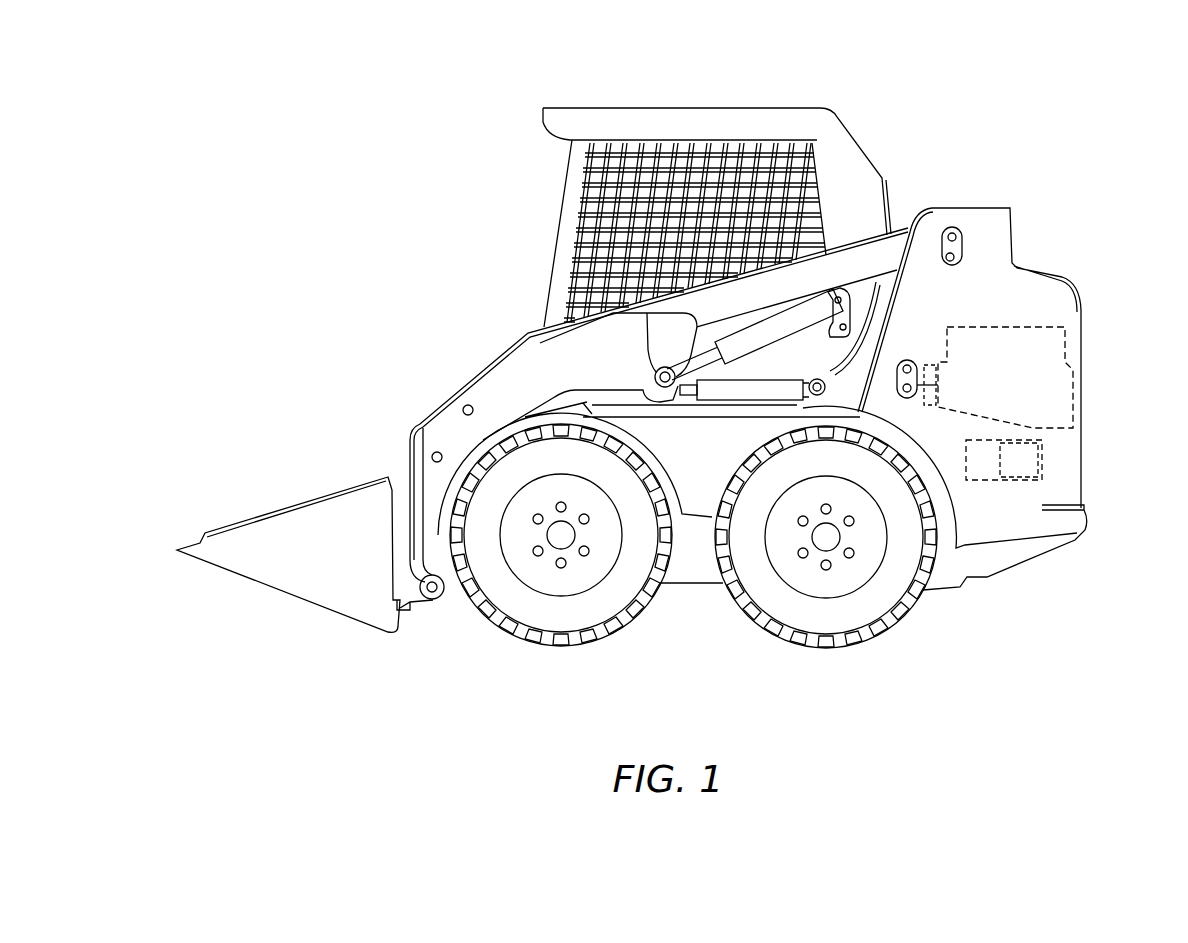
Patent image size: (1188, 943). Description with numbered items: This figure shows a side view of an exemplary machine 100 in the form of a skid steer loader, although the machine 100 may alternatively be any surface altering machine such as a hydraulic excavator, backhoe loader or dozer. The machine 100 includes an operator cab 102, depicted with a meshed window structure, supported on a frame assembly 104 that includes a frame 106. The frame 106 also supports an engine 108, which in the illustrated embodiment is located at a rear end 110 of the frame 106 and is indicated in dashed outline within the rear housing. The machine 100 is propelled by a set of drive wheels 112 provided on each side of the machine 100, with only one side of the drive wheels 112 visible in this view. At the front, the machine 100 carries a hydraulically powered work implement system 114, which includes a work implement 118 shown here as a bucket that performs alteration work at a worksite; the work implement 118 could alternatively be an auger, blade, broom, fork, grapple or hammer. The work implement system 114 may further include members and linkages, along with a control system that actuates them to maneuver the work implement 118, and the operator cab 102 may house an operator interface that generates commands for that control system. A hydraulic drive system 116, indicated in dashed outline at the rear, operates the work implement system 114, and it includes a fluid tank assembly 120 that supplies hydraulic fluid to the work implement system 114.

The machine 100 is at (1090, 80).
The operator cab 102 is at (742, 128).
The frame assembly 104 is at (1045, 570).
The frame 106 is at (696, 588).
The engine 108 is at (984, 384).
The rear end 110 is at (1090, 394).
The drive wheels 112 is at (622, 632).
The work implement system 114 is at (372, 456).
The hydraulic drive system 116 is at (970, 470).
The work implement 118 is at (263, 590).
The fluid tank assembly 120 is at (1007, 470).